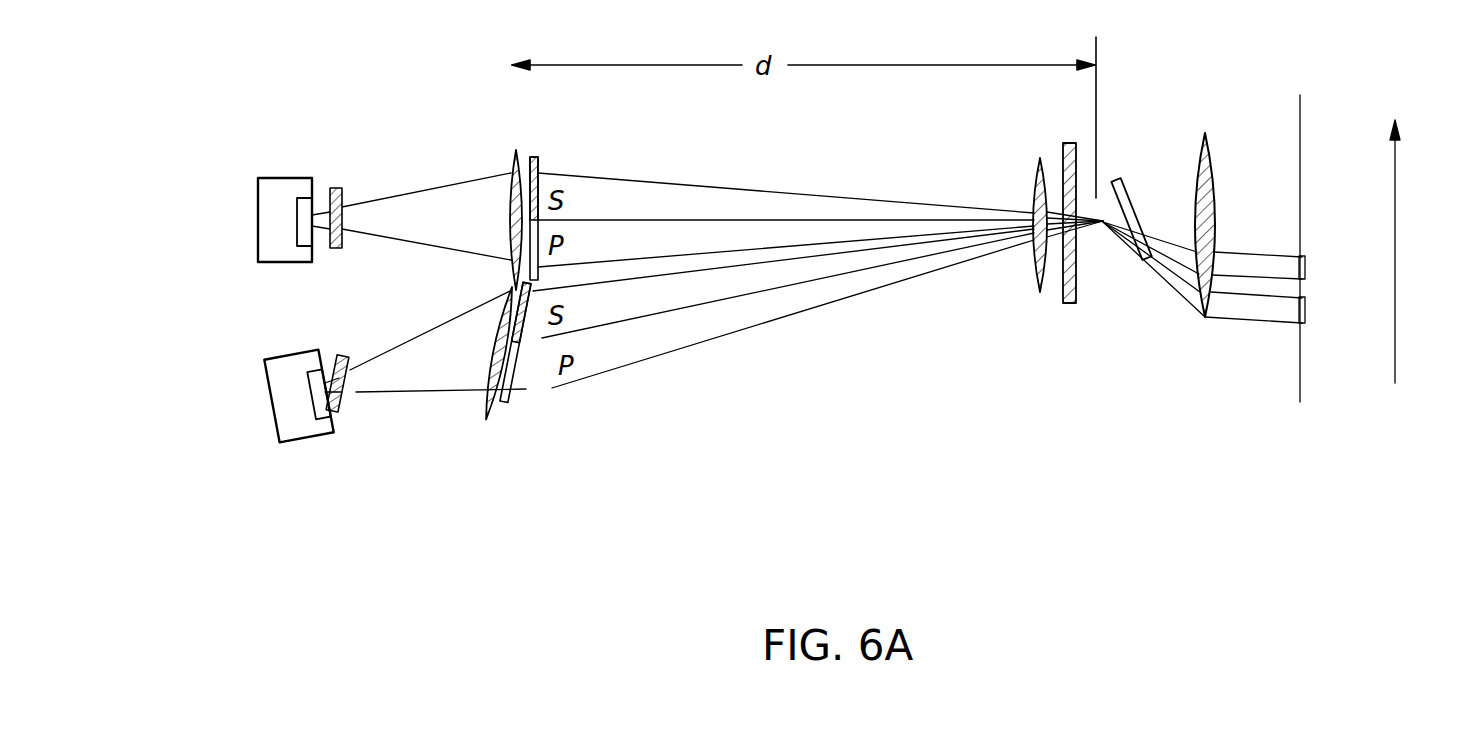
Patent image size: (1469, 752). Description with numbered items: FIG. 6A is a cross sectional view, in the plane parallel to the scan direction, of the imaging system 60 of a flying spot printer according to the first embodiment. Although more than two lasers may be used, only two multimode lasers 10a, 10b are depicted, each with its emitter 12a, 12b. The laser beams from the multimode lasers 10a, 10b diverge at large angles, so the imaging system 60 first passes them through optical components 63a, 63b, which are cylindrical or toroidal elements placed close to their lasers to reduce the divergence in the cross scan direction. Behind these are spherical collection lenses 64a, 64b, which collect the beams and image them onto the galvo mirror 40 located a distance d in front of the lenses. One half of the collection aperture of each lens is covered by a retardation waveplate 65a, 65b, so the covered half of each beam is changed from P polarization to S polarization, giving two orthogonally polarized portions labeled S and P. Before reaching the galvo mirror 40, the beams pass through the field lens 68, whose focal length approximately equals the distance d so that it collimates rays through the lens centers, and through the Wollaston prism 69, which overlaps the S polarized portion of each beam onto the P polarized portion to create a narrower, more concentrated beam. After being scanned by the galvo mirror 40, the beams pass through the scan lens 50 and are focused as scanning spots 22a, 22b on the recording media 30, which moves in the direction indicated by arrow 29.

The multimode laser 10a is at (277, 372).
The multimode laser 10b is at (272, 250).
The first laser emitter 12a is at (312, 404).
The second laser emitter 12b is at (295, 208).
The scanning spot 22a is at (1307, 263).
The scanning spot 22b is at (1307, 312).
The disk motion direction 29 is at (1400, 188).
The recording media 30 is at (1300, 380).
The galvo mirror deflector 40 is at (1120, 188).
The scan lens 50 is at (1212, 160).
The imaging system 60 is at (603, 488).
The optical component 63a is at (360, 413).
The optical component 63b is at (343, 190).
The collection lens 64a is at (530, 410).
The collection lens 64b is at (513, 165).
The retardation waveplate 65a is at (532, 312).
The retardation waveplate 65b is at (540, 160).
The field lens 68 is at (1033, 188).
The Wollaston prism 69 is at (1063, 150).